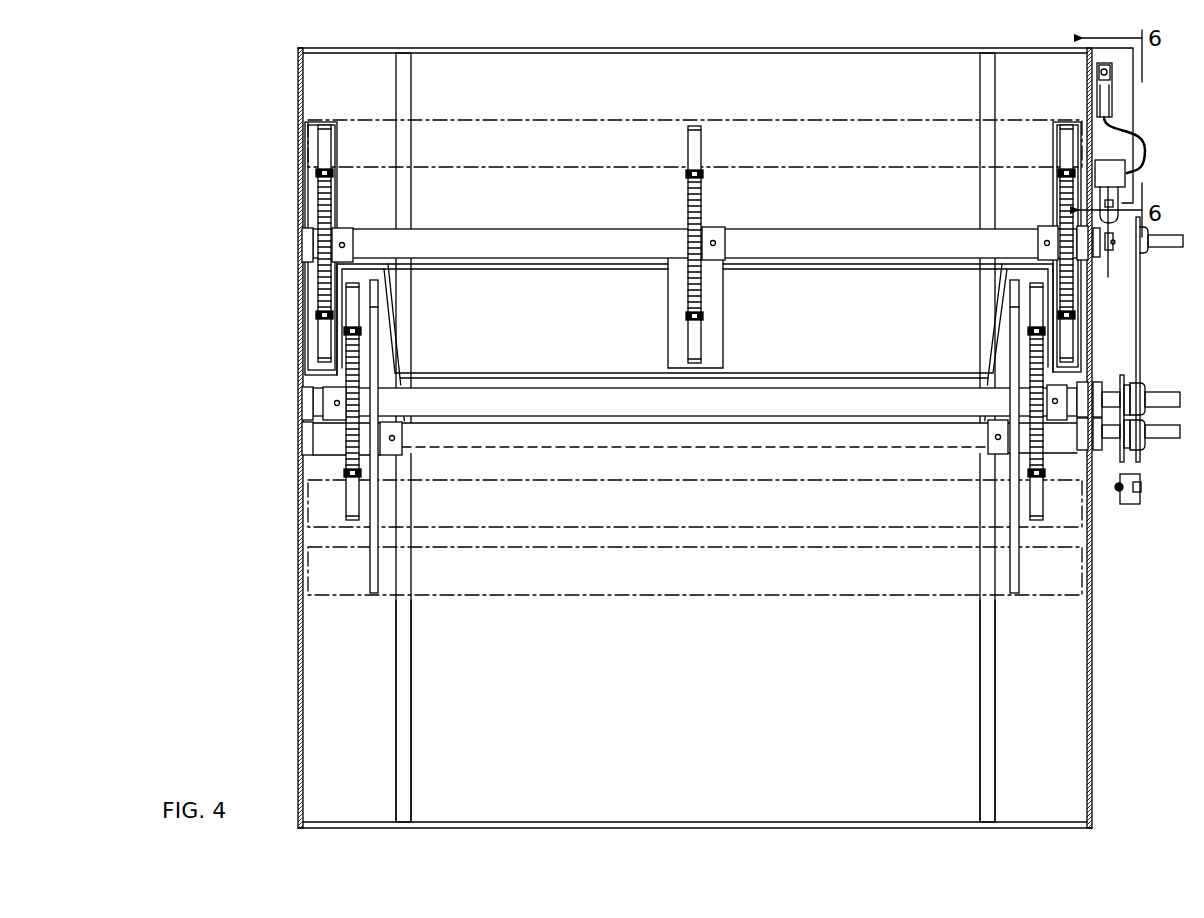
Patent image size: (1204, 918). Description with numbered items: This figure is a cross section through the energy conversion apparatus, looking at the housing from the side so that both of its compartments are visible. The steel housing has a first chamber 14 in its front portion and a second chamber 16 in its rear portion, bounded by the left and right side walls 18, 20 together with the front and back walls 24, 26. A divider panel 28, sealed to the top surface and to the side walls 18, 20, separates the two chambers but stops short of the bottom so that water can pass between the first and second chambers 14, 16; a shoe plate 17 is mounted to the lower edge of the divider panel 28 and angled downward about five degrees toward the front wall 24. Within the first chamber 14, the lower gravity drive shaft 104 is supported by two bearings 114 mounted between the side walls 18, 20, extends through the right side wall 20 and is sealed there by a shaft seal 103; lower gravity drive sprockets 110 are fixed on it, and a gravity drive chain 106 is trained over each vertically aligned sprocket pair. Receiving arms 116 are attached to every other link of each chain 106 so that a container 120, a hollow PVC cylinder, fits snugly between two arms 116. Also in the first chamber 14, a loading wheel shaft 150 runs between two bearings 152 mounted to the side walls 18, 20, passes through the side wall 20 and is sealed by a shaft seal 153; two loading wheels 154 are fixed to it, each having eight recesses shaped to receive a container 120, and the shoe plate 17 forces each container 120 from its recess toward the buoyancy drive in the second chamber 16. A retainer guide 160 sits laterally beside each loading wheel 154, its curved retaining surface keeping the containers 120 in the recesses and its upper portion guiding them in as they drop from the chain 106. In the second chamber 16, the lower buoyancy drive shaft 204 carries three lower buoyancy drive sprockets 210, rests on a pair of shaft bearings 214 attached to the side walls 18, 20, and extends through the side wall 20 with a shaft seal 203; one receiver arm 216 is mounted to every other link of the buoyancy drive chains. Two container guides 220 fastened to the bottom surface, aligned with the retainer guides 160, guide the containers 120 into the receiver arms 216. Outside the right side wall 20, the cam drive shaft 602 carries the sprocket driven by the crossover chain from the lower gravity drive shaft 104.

The first chamber 14 is at (565, 805).
The second chamber 16 is at (632, 72).
The shoe plate 17 is at (817, 296).
The left side wall 18 is at (298, 670).
The right side wall 20 is at (1088, 712).
The front wall 24 is at (708, 830).
The back wall 26 is at (734, 48).
The divider panel 28 is at (800, 373).
The shaft seal 103 is at (1095, 392).
The lower gravity drive shaft 104 is at (496, 400).
The gravity drive chain 106 is at (318, 175).
The lower gravity drive sprocket 110 is at (1030, 372).
The bearing 114 is at (307, 395).
The receiving arm 116 is at (1037, 298).
The container 120 is at (745, 527).
The loading wheel shaft 150 is at (537, 435).
The bearing 152 is at (297, 437).
The shaft seal 153 is at (1097, 442).
The loading wheel 154 is at (382, 570).
The retainer guide 160 is at (405, 718).
The shaft seal 203 is at (1113, 258).
The lower buoyancy drive shaft 204 is at (622, 227).
The lower buoyancy drive sprocket 210 is at (333, 218).
The shaft bearing 214 is at (305, 262).
The receiver arm 216 is at (332, 145).
The container guide 220 is at (402, 103).
The cam drive shaft 602 is at (1135, 505).